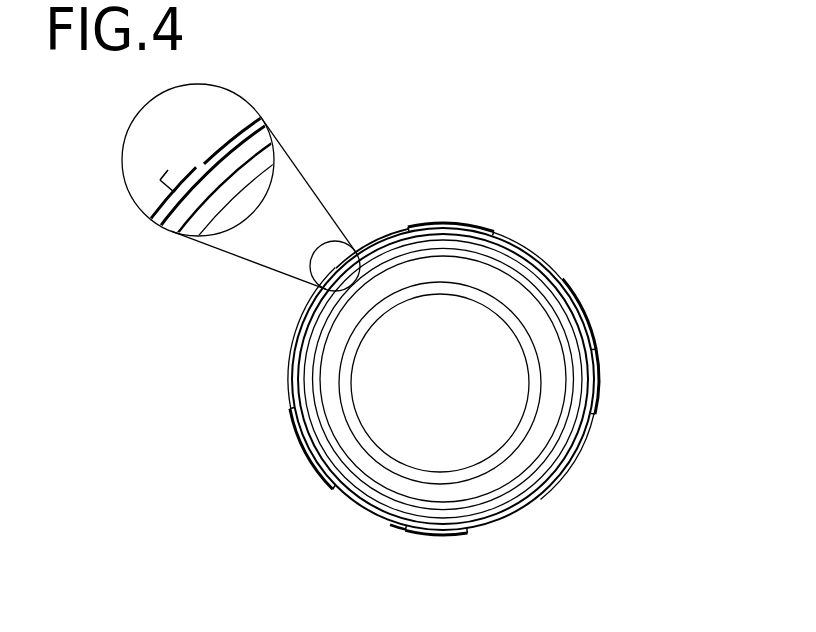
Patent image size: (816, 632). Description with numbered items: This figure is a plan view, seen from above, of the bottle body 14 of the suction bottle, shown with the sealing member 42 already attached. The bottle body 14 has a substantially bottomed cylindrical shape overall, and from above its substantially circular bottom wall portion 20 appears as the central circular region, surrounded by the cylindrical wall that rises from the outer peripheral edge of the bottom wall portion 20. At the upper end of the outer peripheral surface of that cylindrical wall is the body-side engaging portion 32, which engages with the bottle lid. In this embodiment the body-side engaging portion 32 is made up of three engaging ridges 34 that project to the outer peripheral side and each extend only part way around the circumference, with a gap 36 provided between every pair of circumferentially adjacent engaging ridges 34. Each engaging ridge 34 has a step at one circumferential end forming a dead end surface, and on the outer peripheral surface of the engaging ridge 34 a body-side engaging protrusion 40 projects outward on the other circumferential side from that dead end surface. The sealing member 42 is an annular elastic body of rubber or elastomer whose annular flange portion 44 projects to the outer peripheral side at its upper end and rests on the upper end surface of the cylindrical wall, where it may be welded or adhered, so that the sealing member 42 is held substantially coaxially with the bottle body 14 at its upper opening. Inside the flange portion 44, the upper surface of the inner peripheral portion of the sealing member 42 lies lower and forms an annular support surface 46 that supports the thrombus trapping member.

The bottle body 14 is at (526, 270).
The bottom wall portion 20 is at (397, 433).
The body-side engaging portion 32 is at (276, 432).
The engaging ridge 34 is at (410, 224).
The gap 36 is at (510, 235).
The body-side engaging protrusion 40 is at (190, 152).
The sealing member 42 is at (240, 118).
The flange portion 44 is at (560, 313).
The support surface 46 is at (453, 252).